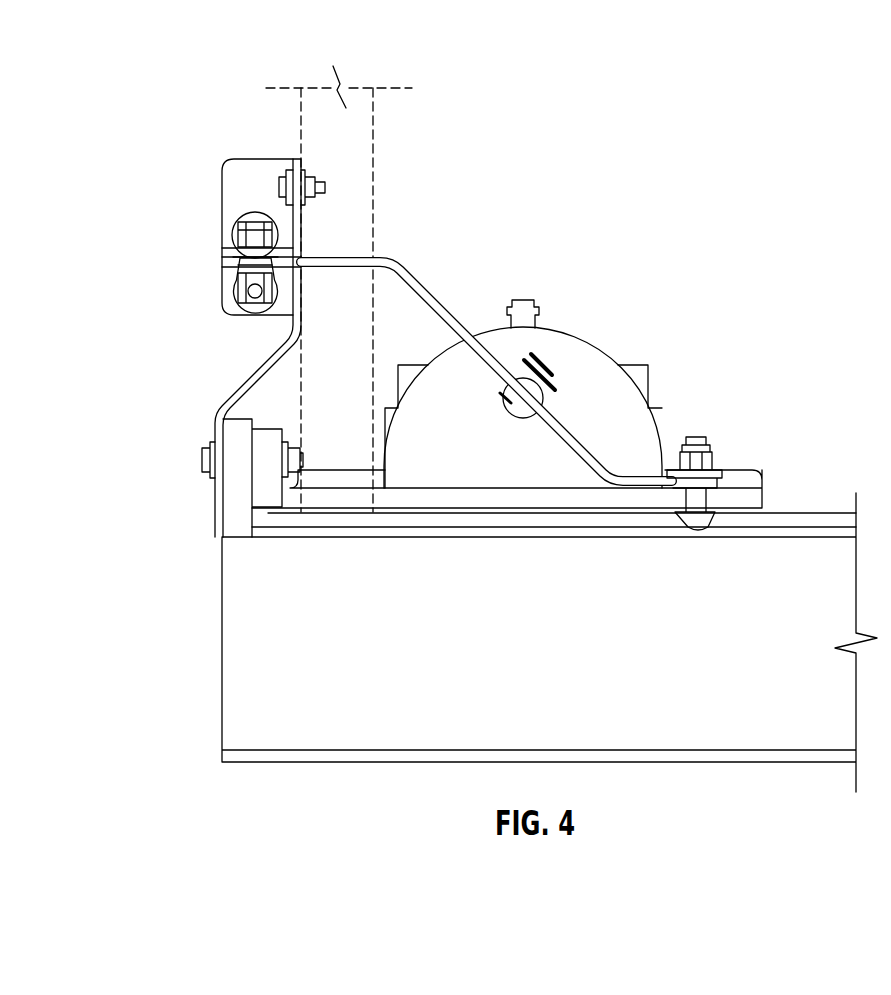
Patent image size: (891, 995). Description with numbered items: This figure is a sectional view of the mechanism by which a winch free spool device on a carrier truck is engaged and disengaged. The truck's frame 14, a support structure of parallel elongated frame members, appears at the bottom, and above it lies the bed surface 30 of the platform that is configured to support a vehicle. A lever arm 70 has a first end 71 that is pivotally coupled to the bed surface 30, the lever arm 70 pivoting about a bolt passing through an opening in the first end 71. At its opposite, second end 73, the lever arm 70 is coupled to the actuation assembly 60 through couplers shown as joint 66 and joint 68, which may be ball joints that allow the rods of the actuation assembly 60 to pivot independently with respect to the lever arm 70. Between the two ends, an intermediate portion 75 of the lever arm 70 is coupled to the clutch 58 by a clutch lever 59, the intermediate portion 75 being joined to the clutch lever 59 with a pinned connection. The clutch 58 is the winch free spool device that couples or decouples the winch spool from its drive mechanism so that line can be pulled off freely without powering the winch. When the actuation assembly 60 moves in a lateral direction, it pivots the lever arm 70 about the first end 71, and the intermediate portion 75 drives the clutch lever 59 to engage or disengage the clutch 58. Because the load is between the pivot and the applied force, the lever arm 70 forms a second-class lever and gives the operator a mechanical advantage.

The frame 14 is at (749, 676).
The bed surface 30 is at (788, 506).
The clutch 58 is at (615, 378).
The clutch lever 59 is at (504, 397).
The actuation assembly 60 is at (240, 133).
The joint 66 is at (237, 230).
The joint 68 is at (256, 285).
The lever arm 70 is at (418, 275).
The first end 71 is at (723, 472).
The second end 73 is at (258, 264).
The intermediate portion 75 is at (531, 393).